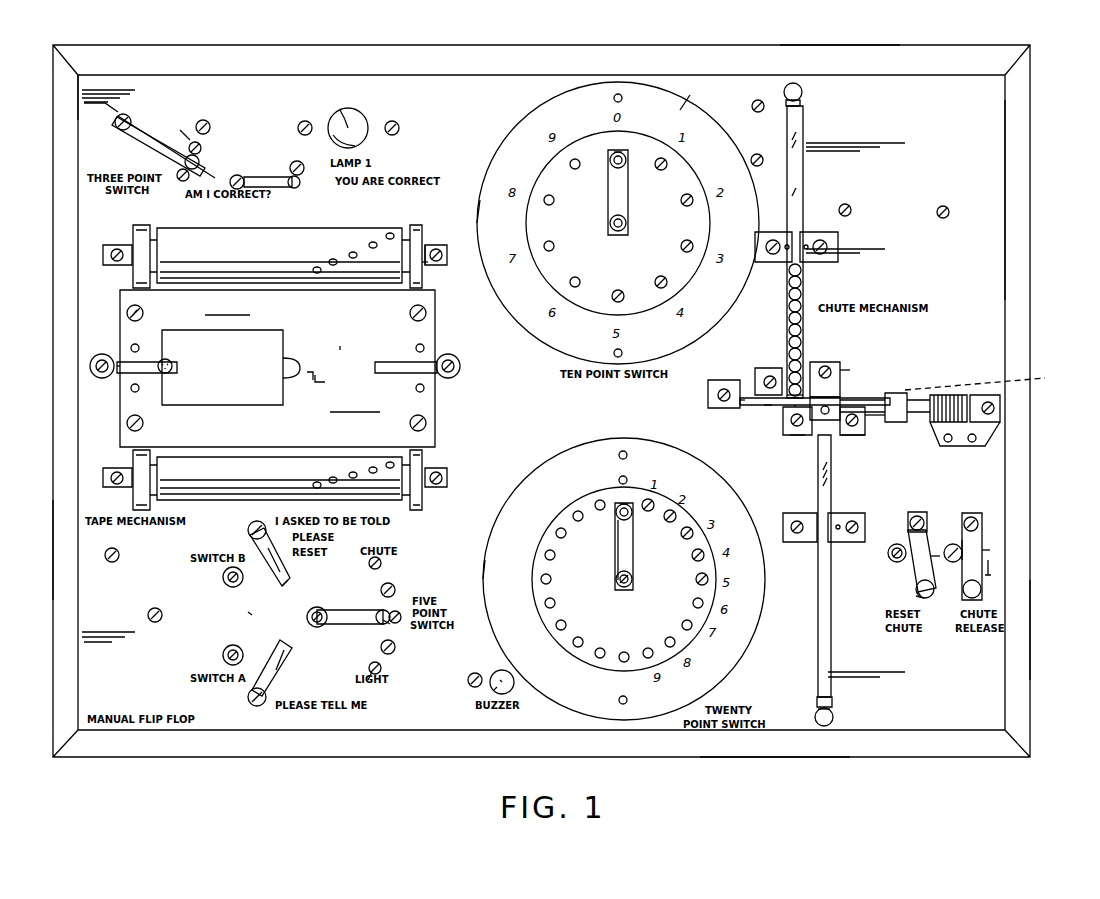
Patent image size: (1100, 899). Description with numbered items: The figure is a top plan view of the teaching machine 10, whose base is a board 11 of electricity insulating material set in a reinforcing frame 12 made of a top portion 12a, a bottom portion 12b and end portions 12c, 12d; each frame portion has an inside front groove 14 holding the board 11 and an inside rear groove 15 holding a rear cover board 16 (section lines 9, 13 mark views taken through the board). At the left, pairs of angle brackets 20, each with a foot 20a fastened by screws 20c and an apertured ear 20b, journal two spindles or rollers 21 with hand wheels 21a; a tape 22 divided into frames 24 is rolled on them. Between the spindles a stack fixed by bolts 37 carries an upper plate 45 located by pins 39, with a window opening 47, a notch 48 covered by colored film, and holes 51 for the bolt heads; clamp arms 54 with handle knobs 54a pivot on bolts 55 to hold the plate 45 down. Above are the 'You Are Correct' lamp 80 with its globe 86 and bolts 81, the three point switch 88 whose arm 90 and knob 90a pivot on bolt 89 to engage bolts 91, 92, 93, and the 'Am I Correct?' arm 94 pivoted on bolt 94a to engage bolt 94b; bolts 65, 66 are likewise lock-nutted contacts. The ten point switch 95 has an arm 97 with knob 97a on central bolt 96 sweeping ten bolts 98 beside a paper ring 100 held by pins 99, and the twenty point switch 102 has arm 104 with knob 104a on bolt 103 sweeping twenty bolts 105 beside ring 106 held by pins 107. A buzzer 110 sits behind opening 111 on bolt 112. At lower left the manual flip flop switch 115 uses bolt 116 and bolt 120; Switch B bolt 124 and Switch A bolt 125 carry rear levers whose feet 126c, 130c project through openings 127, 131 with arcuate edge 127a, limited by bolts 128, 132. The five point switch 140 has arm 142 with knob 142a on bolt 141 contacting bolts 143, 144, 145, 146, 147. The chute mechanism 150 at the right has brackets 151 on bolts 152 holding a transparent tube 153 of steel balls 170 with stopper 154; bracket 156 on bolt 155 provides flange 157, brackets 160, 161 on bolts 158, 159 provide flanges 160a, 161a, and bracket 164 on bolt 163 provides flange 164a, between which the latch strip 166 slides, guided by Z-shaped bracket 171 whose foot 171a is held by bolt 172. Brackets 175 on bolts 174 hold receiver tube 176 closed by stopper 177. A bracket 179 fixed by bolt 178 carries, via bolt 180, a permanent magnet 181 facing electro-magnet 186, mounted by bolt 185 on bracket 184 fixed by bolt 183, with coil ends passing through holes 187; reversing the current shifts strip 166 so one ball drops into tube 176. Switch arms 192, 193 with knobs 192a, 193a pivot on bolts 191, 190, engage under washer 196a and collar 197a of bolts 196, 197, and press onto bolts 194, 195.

The section line 9 is at (128, 372).
The teaching machine 10 is at (35, 236).
The base or board 11 is at (990, 166).
The reinforcing frame 12 is at (768, 402).
The top portion 12a is at (838, 45).
The bottom portion 12b is at (775, 757).
The end portion 12c is at (55, 552).
The end portion 12d is at (1031, 625).
The section line 13 is at (655, 486).
The inside front groove 14 is at (935, 554).
The inside rear groove 15 is at (971, 489).
The rear cover board 16 is at (40, 95).
The angle brackets 20 is at (430, 237).
The foot 20a is at (432, 248).
The apertured ear 20b is at (424, 268).
The screws 20c is at (445, 255).
The spindle or roller 21 is at (412, 477).
The hand wheels 21a is at (424, 497).
The tape 22 is at (300, 240).
The frames or sections 24 is at (270, 400).
The bolts 37 is at (425, 320).
The pins 39 is at (135, 344).
The upper plate 45 is at (352, 342).
The window opening 47 is at (276, 330).
The cut-out or notch 48 is at (302, 368).
The holes 51 is at (130, 308).
The clamp arms 54 is at (130, 362).
The handle knobs 54a is at (162, 358).
The pivot bolts or pins 55 is at (92, 366).
The bolts 65 is at (850, 218).
The bolts 66 is at (754, 158).
The lamp 80 is at (367, 108).
The bolts 81 is at (305, 120).
The hood or globe 86 is at (340, 110).
The Three Point Switch 88 is at (186, 106).
The bolt 89 is at (115, 130).
The switch arm 90 is at (147, 138).
The knob 90a is at (196, 156).
The bolt 91 is at (180, 183).
The bolt 92 is at (195, 148).
The bolt 93 is at (205, 119).
The switch arm 94 is at (292, 190).
The bolt 94a is at (236, 176).
The bolt 94b is at (297, 168).
The Ten Point switch 95 is at (525, 102).
The central bolt 96 is at (626, 223).
The switch arm 97 is at (622, 187).
The knob 97a is at (610, 170).
The bolts 98 is at (662, 155).
The pins 99 is at (619, 94).
The ring 100 is at (690, 115).
The Twenty Point Switch 102 is at (579, 441).
The center bolt 103 is at (634, 580).
The switch arm 104 is at (618, 545).
The knob 104a is at (616, 505).
The bolts 105 is at (785, 430).
The ring 106 is at (797, 432).
The locating pins 107 is at (626, 450).
The buzzer 110 is at (493, 686).
The opening 111 is at (490, 668).
The bolt 112 is at (473, 676).
The Manual Flip Flop switch 115 is at (262, 600).
The bolt 116 is at (116, 556).
The bolt 120 is at (155, 620).
The bolt 124 is at (222, 578).
The bolt 125 is at (240, 650).
The foot 126c is at (283, 586).
The opening 127 is at (279, 556).
The arcuate outer edge 127a is at (247, 557).
The bolt 128 is at (258, 530).
The foot 130c is at (288, 651).
The opening 131 is at (283, 675).
The bolt 132 is at (250, 700).
The Five Point Switch 140 is at (398, 575).
The bolt 141 is at (328, 612).
The switch arm 142 is at (382, 648).
The knob 142a is at (398, 614).
The bolt 143 is at (380, 560).
The bolt 144 is at (395, 590).
The bolt 145 is at (393, 625).
The bolt 146 is at (382, 668).
The bolt 147 is at (382, 676).
The chute mechanism 150 is at (848, 362).
The brackets 151 is at (815, 235).
The bolts 152 is at (823, 258).
The transparent tube 153 is at (802, 146).
The stopper 154 is at (804, 97).
The bolt 155 is at (725, 388).
The angle bracket 156 is at (722, 378).
The flange 157 is at (770, 368).
The bolt 158 is at (784, 443).
The bolt 159 is at (860, 428).
The angle bracket 160 is at (790, 440).
The flange 160a is at (800, 405).
The angle bracket 161 is at (846, 445).
The flange 161a is at (872, 422).
The bolt 163 is at (778, 372).
The angle bracket 164 is at (800, 372).
The flange 164a is at (745, 405).
The latch strip 166 is at (905, 380).
The steel balls 170 is at (802, 290).
The Z-shaped bracket 171 is at (860, 365).
The foot 171a is at (858, 349).
The bolt 172 is at (855, 362).
The bolts 174 is at (795, 542).
The brackets 175 is at (866, 516).
The receiver tube 176 is at (817, 640).
The stopper 177 is at (834, 714).
The bolt 178 is at (908, 385).
The angular bracket 179 is at (975, 395).
The bolt 180 is at (1005, 383).
The permanent ceramic magnet 181 is at (905, 422).
The bolt 183 is at (1000, 410).
The angle bracket 184 is at (965, 425).
The bolt 185 is at (990, 397).
The electro-magnet 186 is at (955, 440).
The holes 187 is at (978, 440).
The bolt 190 is at (927, 518).
The bolt 191 is at (985, 525).
The switch arm 192 is at (977, 540).
The knob 192a is at (975, 565).
The switch arm 193 is at (916, 590).
The knob 193a is at (905, 596).
The bolt 194 is at (965, 615).
The bolt 195 is at (893, 600).
The bolt 196 is at (952, 545).
The washer 196a is at (976, 553).
The bolt 197 is at (923, 560).
The collar 197a is at (897, 546).